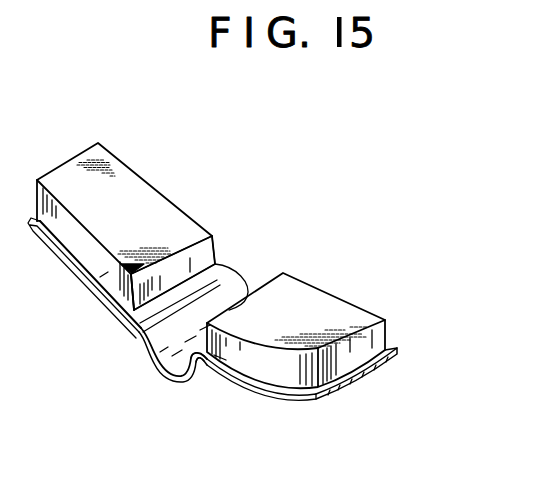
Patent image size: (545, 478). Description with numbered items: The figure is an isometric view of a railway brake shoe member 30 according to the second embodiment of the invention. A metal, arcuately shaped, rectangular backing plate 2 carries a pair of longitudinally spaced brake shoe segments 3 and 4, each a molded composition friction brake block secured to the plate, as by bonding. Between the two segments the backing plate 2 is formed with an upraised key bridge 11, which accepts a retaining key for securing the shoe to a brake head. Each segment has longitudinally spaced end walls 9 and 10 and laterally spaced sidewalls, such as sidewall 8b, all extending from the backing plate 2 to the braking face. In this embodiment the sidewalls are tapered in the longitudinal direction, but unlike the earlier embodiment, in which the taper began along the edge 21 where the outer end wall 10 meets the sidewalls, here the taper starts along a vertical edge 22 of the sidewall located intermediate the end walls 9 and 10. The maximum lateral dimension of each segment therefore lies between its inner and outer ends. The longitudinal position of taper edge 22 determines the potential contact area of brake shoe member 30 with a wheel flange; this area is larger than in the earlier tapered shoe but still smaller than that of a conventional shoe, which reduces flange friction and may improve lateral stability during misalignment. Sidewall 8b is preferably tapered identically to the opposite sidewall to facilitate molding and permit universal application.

The brake shoe member 30 is at (136, 164).
The brake shoe segment 3 is at (125, 197).
The end wall 10 is at (202, 259).
The brake shoe segment 4 is at (321, 309).
The sidewall 8b is at (55, 227).
The vertical edge 22 is at (108, 272).
The edge 21 is at (130, 299).
The key bridge 11 is at (157, 364).
The backing plate 2 is at (350, 381).
The end wall 9 is at (372, 363).